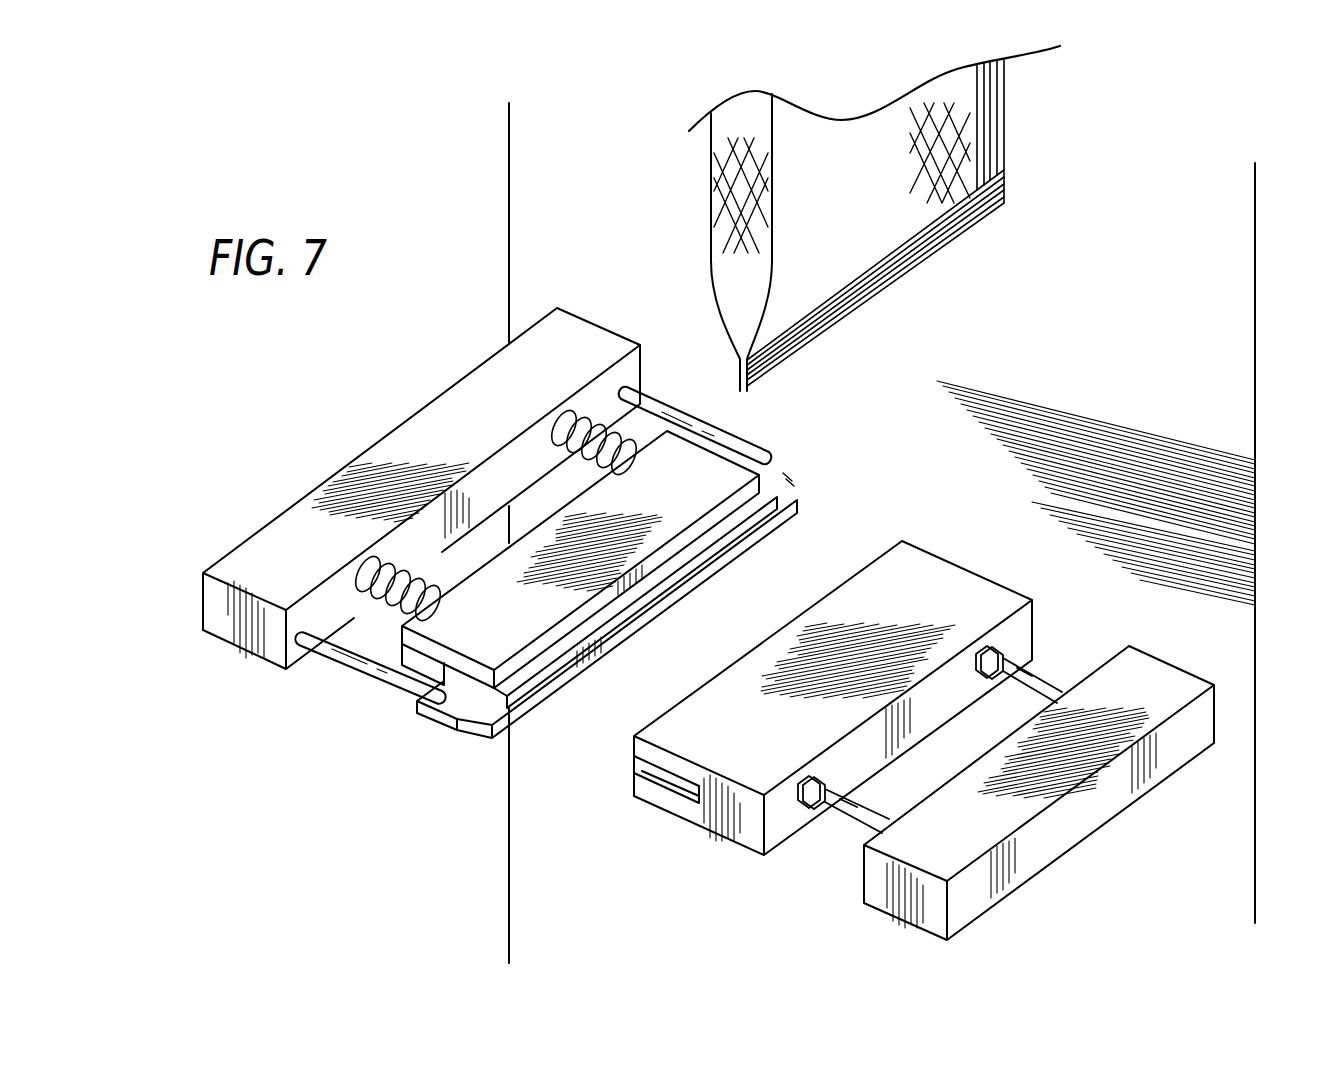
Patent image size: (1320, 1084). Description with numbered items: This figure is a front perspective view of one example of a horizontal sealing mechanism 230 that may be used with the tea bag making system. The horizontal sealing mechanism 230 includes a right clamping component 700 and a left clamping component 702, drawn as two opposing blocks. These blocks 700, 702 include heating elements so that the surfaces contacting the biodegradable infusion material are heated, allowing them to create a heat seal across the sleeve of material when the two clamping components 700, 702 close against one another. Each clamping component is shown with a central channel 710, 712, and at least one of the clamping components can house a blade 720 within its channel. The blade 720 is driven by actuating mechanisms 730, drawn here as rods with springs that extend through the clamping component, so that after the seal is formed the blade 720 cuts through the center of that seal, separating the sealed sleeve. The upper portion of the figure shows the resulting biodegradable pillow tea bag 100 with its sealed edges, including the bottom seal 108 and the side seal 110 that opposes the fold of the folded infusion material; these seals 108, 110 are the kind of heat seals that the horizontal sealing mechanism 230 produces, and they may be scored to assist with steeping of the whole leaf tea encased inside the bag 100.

The horizontal sealing mechanism 230 is at (340, 417).
The right clamping component 700 is at (686, 468).
The central channel 710 is at (717, 540).
The blade 720 is at (470, 706).
The actuating mechanisms 730 is at (672, 403).
The left clamping component 702 is at (897, 606).
The central channel 712 is at (663, 778).
The biodegradable pillow tea bag 100 is at (882, 162).
The bottom seal 108 is at (912, 258).
The side seal 110 is at (993, 103).